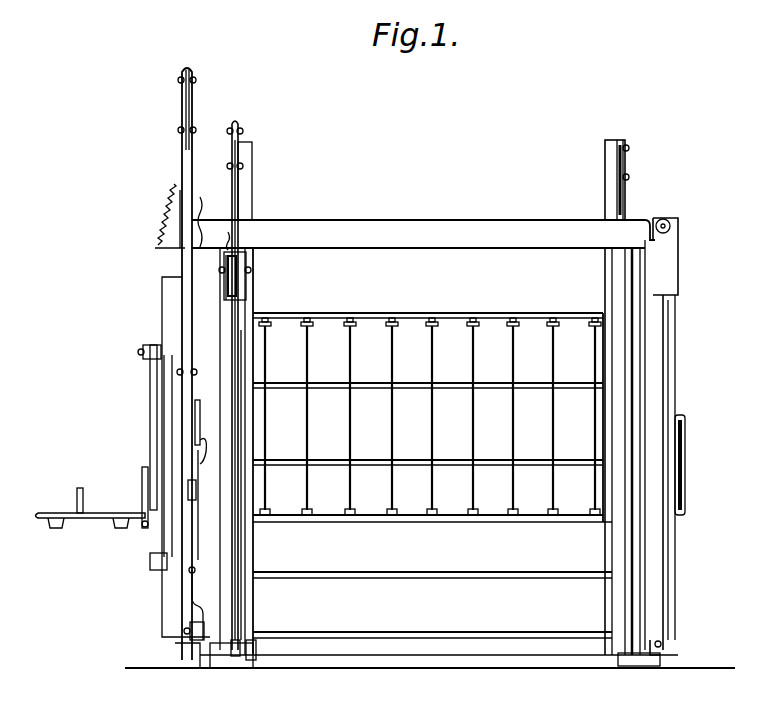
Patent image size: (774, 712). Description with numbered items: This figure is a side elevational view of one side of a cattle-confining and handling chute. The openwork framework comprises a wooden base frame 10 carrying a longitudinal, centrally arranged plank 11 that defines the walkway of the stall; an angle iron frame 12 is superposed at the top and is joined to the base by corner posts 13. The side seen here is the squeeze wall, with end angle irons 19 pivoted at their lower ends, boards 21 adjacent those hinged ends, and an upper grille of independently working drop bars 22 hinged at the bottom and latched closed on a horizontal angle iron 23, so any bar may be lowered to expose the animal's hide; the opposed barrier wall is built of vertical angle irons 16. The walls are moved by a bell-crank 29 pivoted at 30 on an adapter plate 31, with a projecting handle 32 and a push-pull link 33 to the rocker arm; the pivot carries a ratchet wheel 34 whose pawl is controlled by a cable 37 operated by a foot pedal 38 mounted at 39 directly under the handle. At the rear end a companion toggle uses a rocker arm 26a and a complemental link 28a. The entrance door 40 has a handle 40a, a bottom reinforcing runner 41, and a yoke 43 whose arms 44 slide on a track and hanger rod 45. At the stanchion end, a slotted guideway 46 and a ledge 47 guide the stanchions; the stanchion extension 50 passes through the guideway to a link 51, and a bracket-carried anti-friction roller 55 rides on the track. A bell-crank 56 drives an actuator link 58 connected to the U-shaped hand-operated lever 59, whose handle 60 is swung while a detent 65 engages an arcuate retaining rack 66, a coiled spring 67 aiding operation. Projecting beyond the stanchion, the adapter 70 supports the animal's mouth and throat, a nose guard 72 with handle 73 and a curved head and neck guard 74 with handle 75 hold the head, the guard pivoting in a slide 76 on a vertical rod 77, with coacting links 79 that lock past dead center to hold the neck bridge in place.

The base frame 10 is at (528, 664).
The plank 11 is at (487, 634).
The angle iron frame 12 is at (406, 209).
The corner posts 13 is at (226, 358).
The vertical angle irons 16 is at (377, 298).
The end angle irons 19 is at (246, 302).
The boards 21 is at (366, 633).
The drop bar 22 is at (496, 372).
The horizontal angle iron 23 is at (422, 313).
The rocker arm 26a is at (624, 210).
The complemental link 28a is at (605, 186).
The bell-crank 29 is at (251, 206).
The pivot 30 is at (248, 266).
The adapter plate 31 is at (226, 284).
The handle 32 is at (240, 178).
The push-pull link 33 is at (232, 135).
The ratchet wheel 34 is at (236, 246).
The cable 37 is at (246, 573).
The foot pedal 38 is at (232, 656).
The pedal mounting location 39 is at (256, 652).
The door 40 is at (677, 390).
The handle 40a is at (684, 458).
The reinforcing runner 41 is at (679, 652).
The yoke 43 is at (676, 319).
The yoke arms 44 is at (678, 271).
The track and hanger rod 45 is at (668, 224).
The guideway 46 is at (210, 220).
The ledge 47 is at (175, 643).
The extension 50 is at (182, 160).
The link 51 is at (184, 104).
The anti-friction roller 55 is at (190, 626).
The bell-crank 56 is at (194, 590).
The actuator link 58 is at (190, 400).
The hand-operated lever 59 is at (170, 327).
The handle 60 is at (196, 515).
The detent 65 is at (190, 488).
The retaining rack 66 is at (204, 444).
The coiled spring 67 is at (162, 216).
The adapter 70 is at (108, 504).
The nose guard 72 is at (80, 488).
The handle 73 is at (68, 528).
The head and neck guard 74 is at (142, 470).
The handle 75 is at (144, 528).
The slide 76 is at (150, 560).
The vertical rod 77 is at (142, 350).
The links 79 is at (150, 392).